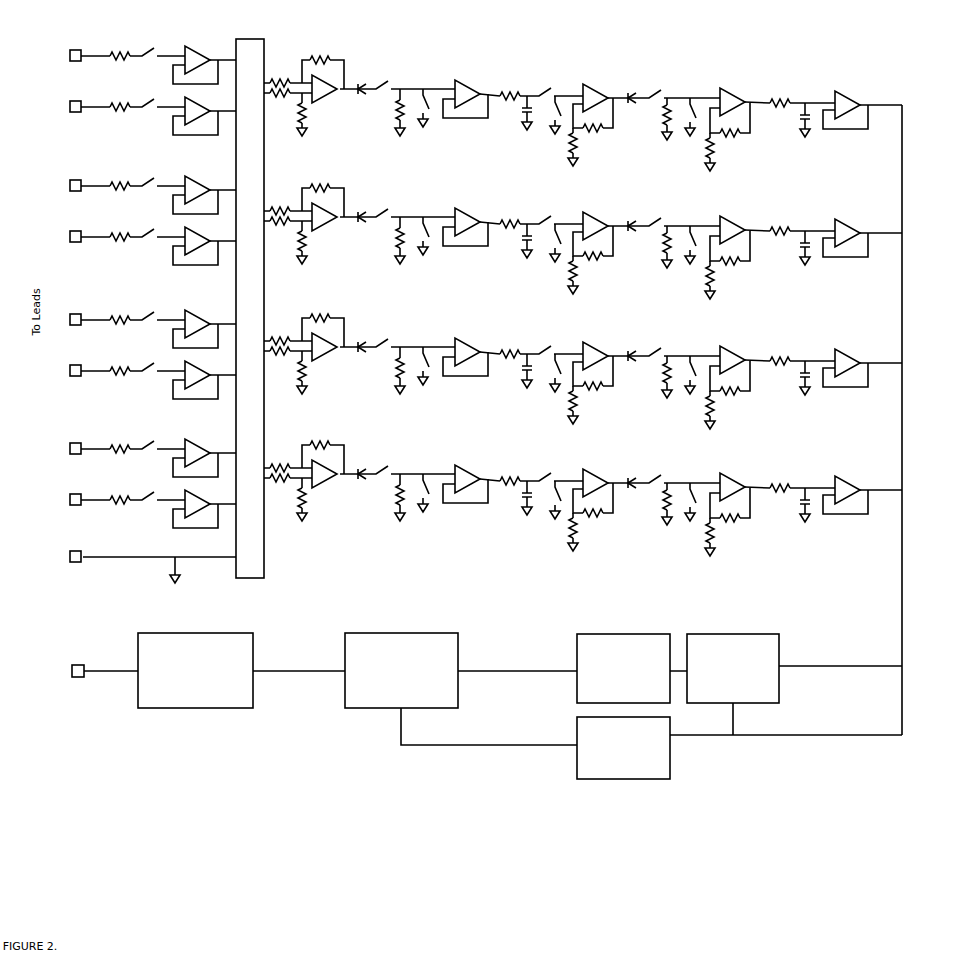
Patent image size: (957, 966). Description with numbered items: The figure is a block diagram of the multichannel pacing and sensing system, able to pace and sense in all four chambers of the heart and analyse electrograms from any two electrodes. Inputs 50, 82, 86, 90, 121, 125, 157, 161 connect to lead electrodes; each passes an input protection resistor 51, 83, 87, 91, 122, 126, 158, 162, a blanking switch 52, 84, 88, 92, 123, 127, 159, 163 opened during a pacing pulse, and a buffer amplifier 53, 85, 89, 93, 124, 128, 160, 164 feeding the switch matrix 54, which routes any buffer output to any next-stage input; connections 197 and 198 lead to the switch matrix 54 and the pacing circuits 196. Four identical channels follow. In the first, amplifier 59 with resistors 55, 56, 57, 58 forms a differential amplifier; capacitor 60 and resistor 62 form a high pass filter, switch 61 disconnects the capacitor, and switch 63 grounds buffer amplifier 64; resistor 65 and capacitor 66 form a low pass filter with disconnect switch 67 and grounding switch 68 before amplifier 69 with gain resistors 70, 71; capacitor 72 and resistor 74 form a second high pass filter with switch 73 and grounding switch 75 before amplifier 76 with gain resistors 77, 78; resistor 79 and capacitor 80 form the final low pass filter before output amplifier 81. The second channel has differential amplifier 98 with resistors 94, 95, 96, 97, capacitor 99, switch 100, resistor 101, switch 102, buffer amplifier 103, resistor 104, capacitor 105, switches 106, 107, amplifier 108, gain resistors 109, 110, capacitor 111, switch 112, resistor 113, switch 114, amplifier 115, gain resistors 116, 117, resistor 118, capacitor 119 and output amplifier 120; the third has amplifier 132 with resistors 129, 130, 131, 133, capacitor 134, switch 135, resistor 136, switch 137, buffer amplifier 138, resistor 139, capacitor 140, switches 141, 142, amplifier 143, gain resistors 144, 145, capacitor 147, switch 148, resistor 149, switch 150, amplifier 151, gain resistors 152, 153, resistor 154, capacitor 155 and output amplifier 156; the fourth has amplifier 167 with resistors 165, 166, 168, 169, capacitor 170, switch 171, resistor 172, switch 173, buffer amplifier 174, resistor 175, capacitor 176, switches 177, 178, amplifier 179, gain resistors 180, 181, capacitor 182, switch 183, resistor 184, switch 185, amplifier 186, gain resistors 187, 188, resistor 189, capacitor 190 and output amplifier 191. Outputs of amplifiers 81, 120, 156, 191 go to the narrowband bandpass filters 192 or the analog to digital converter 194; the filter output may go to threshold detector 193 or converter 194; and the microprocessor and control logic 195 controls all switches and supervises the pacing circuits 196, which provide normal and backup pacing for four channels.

The input to the sensing system 50 is at (77, 46).
The input protection resistor 51 is at (118, 46).
The blanking switch 52 is at (149, 44).
The buffer amplifier 53 is at (195, 59).
The switch matrix 54 is at (250, 298).
The resistor 55 is at (280, 73).
The resistor 56 is at (323, 64).
The resistor 57 is at (280, 103).
The resistor 58 is at (294, 114).
The amplifier 59 is at (324, 97).
The capacitor 60 is at (363, 81).
The switch 61 is at (385, 75).
The resistor 62 is at (391, 112).
The switch 63 is at (419, 108).
The buffer amplifier 64 is at (465, 89).
The resistor 65 is at (510, 85).
The capacitor 66 is at (518, 113).
The switch 67 is at (546, 83).
The switch 68 is at (549, 115).
The amplifier 69 is at (595, 91).
The gain resistor 70 is at (593, 123).
The gain resistor 71 is at (564, 147).
The capacitor 72 is at (628, 92).
The switch 73 is at (656, 84).
The resistor 74 is at (660, 119).
The switch 75 is at (686, 117).
The amplifier 76 is at (732, 96).
The gain resistor 77 is at (730, 126).
The gain resistor 78 is at (719, 152).
The resistor 79 is at (780, 93).
The capacitor 80 is at (796, 120).
The amplifier 81 is at (845, 104).
The input to the sensing system 82 is at (77, 98).
The input protection resistor 83 is at (119, 95).
The blanking switch 84 is at (149, 93).
The buffer amplifier 85 is at (195, 126).
The input to the sensing system 86 is at (77, 176).
The input protection resistor 87 is at (118, 176).
The blanking switch 88 is at (149, 174).
The buffer amplifier 89 is at (195, 189).
The input to the sensing system 90 is at (77, 228).
The input protection resistor 91 is at (119, 225).
The blanking switch 92 is at (149, 223).
The buffer amplifier 93 is at (195, 256).
The input resistor 94 is at (280, 201).
The feedback resistor 95 is at (323, 192).
The input resistor 96 is at (280, 231).
The resistor to ground 97 is at (294, 242).
The amplifier 98 is at (324, 225).
The capacitor 99 is at (363, 209).
The switch 100 is at (387, 203).
The resistor 101 is at (390, 240).
The switch 102 is at (418, 236).
The buffer amplifier 103 is at (465, 217).
The resistor 104 is at (509, 213).
The capacitor 105 is at (517, 241).
The switch 106 is at (547, 211).
The switch 107 is at (548, 243).
The amplifier 108 is at (595, 219).
The gain resistor 109 is at (594, 251).
The gain resistor 110 is at (563, 275).
The capacitor 111 is at (627, 220).
The switch 112 is at (656, 212).
The resistor 113 is at (655, 247).
The switch 114 is at (688, 240).
The amplifier 115 is at (732, 224).
The gain resistor 116 is at (731, 254).
The gain resistor 117 is at (721, 280).
The resistor 118 is at (780, 221).
The capacitor 119 is at (795, 248).
The amplifier 120 is at (845, 232).
The input to the sensing system 121 is at (78, 310).
The input protection resistor 122 is at (117, 310).
The blanking switch 123 is at (149, 308).
The buffer amplifier 124 is at (195, 323).
The input to the sensing system 125 is at (77, 362).
The input protection resistor 126 is at (118, 359).
The blanking switch 127 is at (149, 357).
The buffer amplifier 128 is at (195, 390).
The input resistor 129 is at (282, 331).
The input resistor 130 is at (284, 358).
The feedback resistor 131 is at (323, 322).
The amplifier 132 is at (326, 355).
The resistor to ground 133 is at (293, 372).
The capacitor 134 is at (363, 339).
The switch 135 is at (387, 333).
The resistor 136 is at (390, 370).
The switch 137 is at (418, 366).
The buffer amplifier 138 is at (465, 347).
The resistor 139 is at (509, 343).
The capacitor 140 is at (517, 371).
The switch 141 is at (547, 341).
The switch 142 is at (548, 373).
The amplifier 143 is at (595, 349).
The gain resistor 144 is at (594, 381).
The gain resistor 145 is at (563, 405).
The capacitor 147 is at (630, 351).
The switch 148 is at (657, 343).
The resistor 149 is at (655, 377).
The switch 150 is at (688, 370).
The amplifier 151 is at (732, 354).
The gain resistor 152 is at (731, 384).
The gain resistor 153 is at (721, 410).
The resistor 154 is at (780, 351).
The capacitor 155 is at (795, 378).
The amplifier 156 is at (845, 362).
The input to the sensing system 157 is at (78, 439).
The input protection resistor 158 is at (117, 439).
The blanking switch 159 is at (149, 437).
The buffer amplifier 160 is at (195, 452).
The input to the sensing system 161 is at (77, 491).
The input protection resistor 162 is at (118, 488).
The blanking switch 163 is at (149, 486).
The buffer amplifier 164 is at (195, 519).
The input resistor 165 is at (282, 458).
The feedback resistor 166 is at (323, 449).
The amplifier 167 is at (326, 482).
The input resistor 168 is at (281, 488).
The resistor to ground 169 is at (293, 499).
The capacitor 170 is at (363, 466).
The switch 171 is at (387, 460).
The resistor 172 is at (390, 497).
The switch 173 is at (420, 486).
The buffer amplifier 174 is at (465, 474).
The resistor 175 is at (509, 470).
The capacitor 176 is at (517, 498).
The switch 177 is at (547, 468).
The switch 178 is at (548, 500).
The amplifier 179 is at (595, 476).
The gain resistor 180 is at (594, 508).
The gain resistor 181 is at (563, 532).
The capacitor 182 is at (626, 476).
The switch 183 is at (656, 469).
The resistor 184 is at (655, 504).
The switch 185 is at (688, 495).
The amplifier 186 is at (732, 481).
The gain resistor 187 is at (731, 511).
The gain resistor 188 is at (721, 537).
The resistor 189 is at (780, 478).
The capacitor 190 is at (795, 505).
The amplifier 191 is at (845, 489).
The narrowband bandpass filters 192 is at (733, 661).
The threshold detector 193 is at (623, 661).
The analog to digital converter 194 is at (623, 759).
The microprocessor and control logic 195 is at (401, 664).
The pacing circuits 196 is at (195, 663).
The ground lead terminal 197 is at (78, 549).
The pacing lead terminal 198 is at (78, 664).